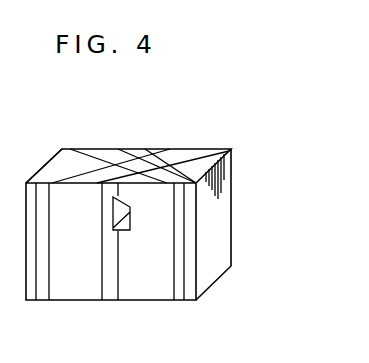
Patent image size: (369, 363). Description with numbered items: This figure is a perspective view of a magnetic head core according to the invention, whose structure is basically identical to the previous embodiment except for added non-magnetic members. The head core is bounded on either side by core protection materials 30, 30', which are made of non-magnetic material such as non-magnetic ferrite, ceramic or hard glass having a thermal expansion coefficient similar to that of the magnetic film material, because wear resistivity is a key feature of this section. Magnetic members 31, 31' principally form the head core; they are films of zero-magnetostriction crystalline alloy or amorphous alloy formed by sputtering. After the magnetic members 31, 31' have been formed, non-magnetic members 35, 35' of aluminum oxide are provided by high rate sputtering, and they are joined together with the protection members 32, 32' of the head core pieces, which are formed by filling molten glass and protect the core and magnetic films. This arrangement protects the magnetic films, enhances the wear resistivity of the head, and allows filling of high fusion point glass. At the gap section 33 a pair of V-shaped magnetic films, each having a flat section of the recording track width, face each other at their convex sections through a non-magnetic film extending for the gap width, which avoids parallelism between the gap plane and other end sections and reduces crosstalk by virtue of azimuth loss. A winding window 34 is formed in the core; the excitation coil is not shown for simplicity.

The core protection material 30 is at (149, 224).
The core protection material 30' is at (34, 164).
The magnetic member 31 is at (186, 152).
The magnetic member 31' is at (111, 148).
The protection member 32 is at (114, 265).
The protection member 32' is at (157, 147).
The gap section 33 is at (166, 151).
The winding window 34 is at (113, 226).
The non-magnetic member 35 is at (62, 262).
The non-magnetic member 35' is at (118, 151).